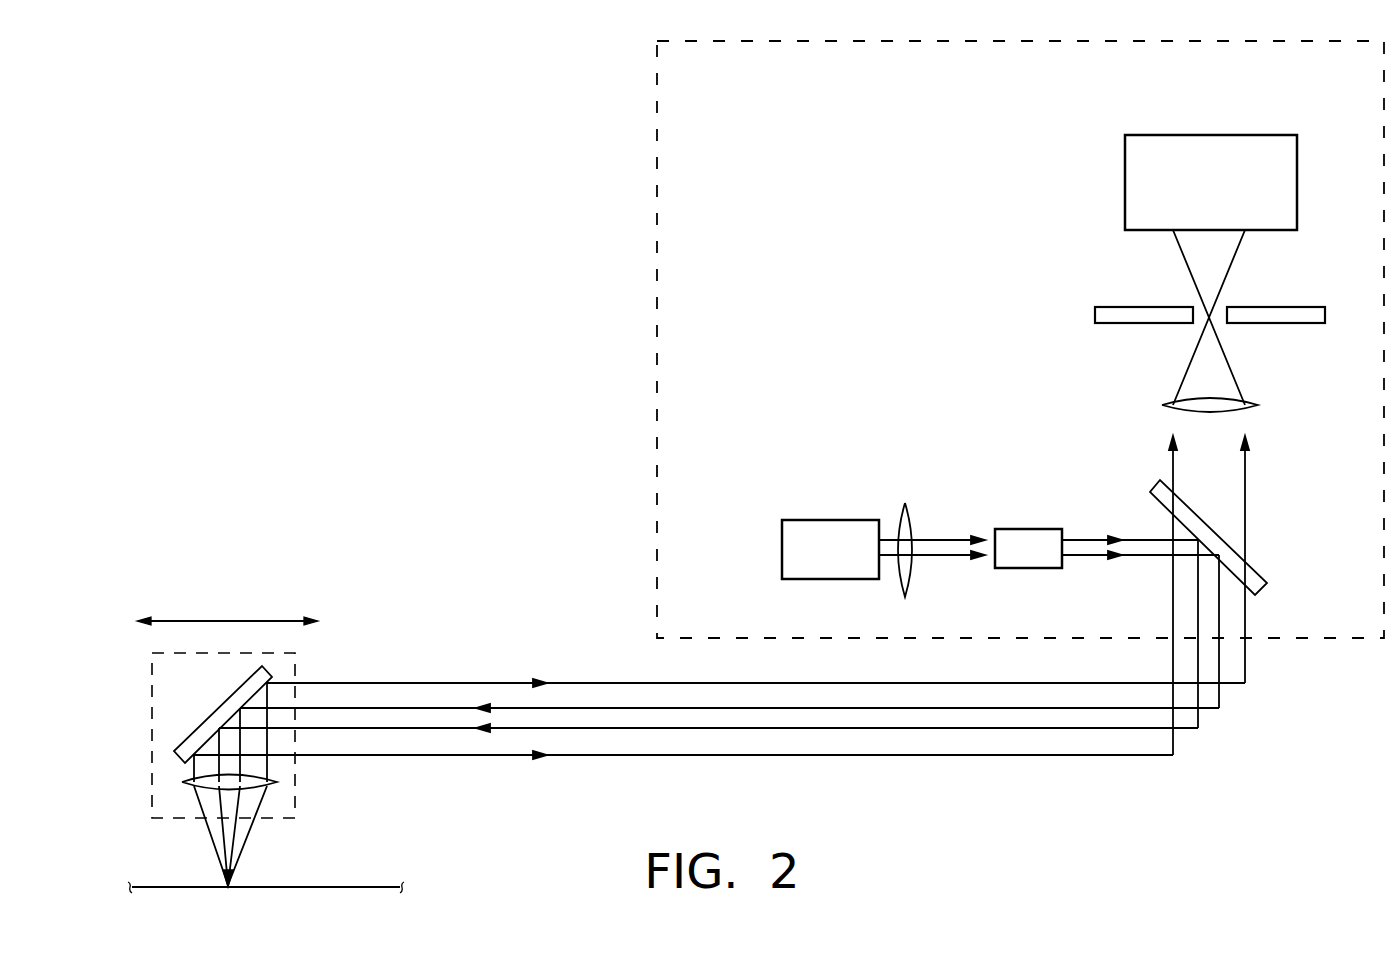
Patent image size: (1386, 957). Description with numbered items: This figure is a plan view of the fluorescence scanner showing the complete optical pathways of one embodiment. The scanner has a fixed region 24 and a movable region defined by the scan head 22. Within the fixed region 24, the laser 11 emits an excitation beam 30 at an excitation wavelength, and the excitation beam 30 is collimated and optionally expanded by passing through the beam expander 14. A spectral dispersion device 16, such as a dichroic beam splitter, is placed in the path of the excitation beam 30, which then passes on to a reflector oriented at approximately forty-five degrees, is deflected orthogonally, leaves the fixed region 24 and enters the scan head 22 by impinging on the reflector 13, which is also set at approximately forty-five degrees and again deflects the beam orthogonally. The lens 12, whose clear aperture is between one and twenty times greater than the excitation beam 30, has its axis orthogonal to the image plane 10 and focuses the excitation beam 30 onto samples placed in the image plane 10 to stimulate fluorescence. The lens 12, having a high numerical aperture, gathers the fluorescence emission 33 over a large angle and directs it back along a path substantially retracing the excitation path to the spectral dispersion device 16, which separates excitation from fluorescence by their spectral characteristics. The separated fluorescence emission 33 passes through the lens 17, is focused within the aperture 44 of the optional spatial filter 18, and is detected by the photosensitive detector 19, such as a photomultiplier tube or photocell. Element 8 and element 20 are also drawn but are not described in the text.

The cylindrical lens 8 is at (902, 503).
The image plane 10 is at (378, 887).
The laser 11 is at (824, 520).
The lens 12 is at (277, 782).
The reflector 13 is at (190, 740).
The beam expander 14 is at (1030, 529).
The spectral dispersion device 16 is at (1152, 488).
The lens 17 is at (1162, 405).
The spatial filter 18 is at (1095, 315).
The photosensitive detector 19 is at (1125, 178).
The scan direction 20 is at (222, 618).
The scan head 22 is at (150, 786).
The fixed region 24 is at (657, 438).
The excitation beam 30 is at (943, 540).
The fluorescence emission 33 is at (1247, 490).
The aperture 44 is at (1230, 340).